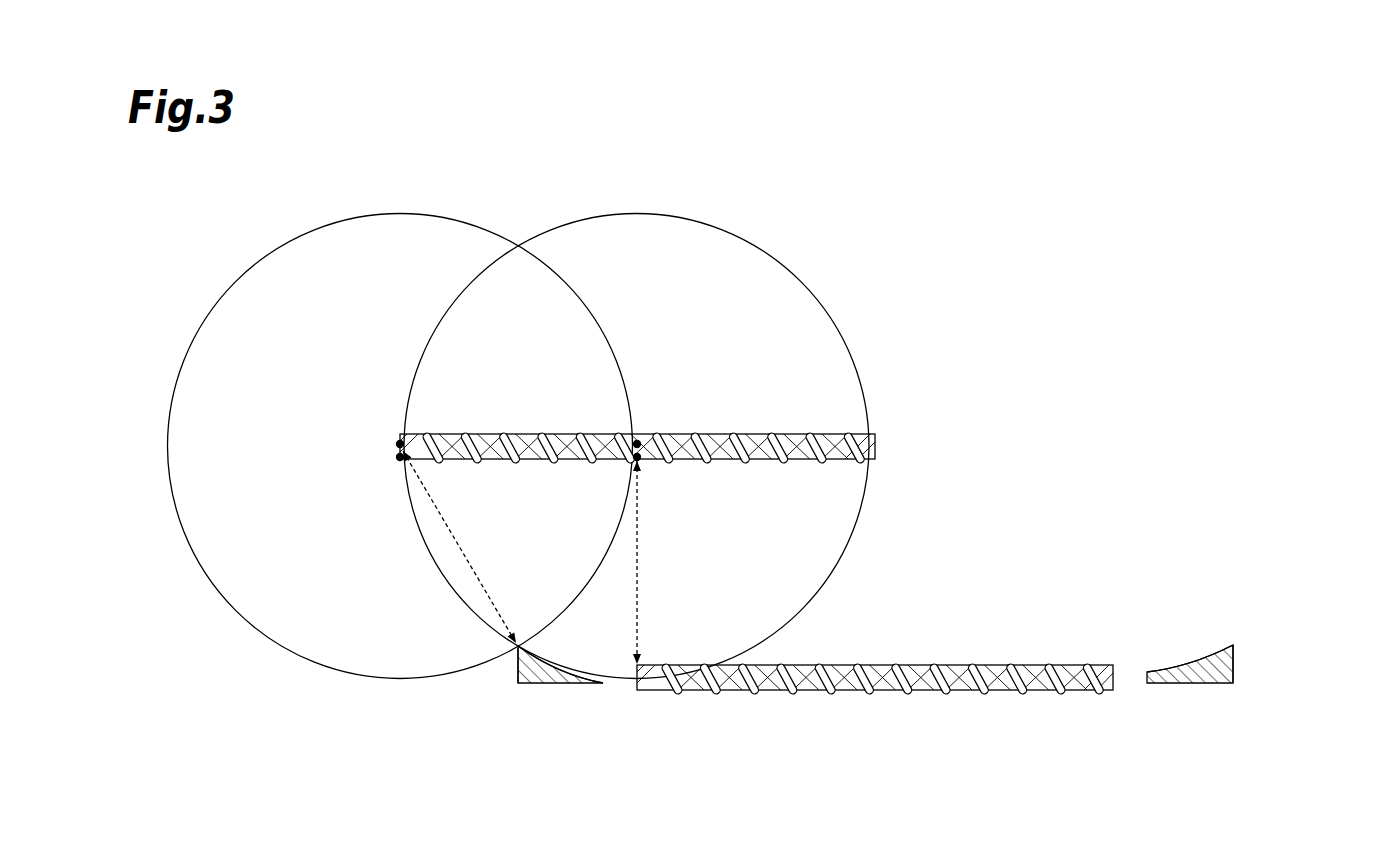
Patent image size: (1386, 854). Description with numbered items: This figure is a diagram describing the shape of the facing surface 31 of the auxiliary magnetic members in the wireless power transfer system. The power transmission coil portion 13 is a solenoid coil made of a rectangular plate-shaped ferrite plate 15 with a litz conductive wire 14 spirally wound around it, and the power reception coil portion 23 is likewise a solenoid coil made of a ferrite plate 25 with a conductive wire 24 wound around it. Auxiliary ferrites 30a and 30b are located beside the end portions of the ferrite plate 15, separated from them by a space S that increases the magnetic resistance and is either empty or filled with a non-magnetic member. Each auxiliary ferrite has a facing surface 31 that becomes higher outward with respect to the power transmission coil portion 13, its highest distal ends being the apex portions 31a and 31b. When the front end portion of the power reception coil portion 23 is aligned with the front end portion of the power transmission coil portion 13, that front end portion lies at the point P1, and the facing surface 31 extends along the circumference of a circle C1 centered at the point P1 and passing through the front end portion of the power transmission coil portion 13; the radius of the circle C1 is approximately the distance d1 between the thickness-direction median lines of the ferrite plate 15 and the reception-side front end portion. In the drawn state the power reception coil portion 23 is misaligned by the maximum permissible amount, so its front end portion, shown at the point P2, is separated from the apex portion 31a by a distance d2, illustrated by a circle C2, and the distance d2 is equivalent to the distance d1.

The power transmission coil portion 13 is at (875, 728).
The conductive wire 14 is at (910, 692).
The ferrite plate 15 is at (851, 692).
The power reception coil portion 23 is at (685, 410).
The conductive wire 24 is at (660, 433).
The ferrite plate 25 is at (765, 433).
The auxiliary ferrite 30a is at (517, 685).
The auxiliary ferrite 30b is at (1237, 668).
The facing surface 31 is at (564, 662).
The apex portion 31a is at (516, 655).
The apex portion 31b is at (1237, 648).
The space S is at (620, 688).
The point P1 is at (640, 460).
The center point P2 is at (397, 445).
The circle C1 is at (640, 213).
The circle C2 is at (402, 213).
The distance d1 is at (651, 562).
The distance d2 is at (459, 547).